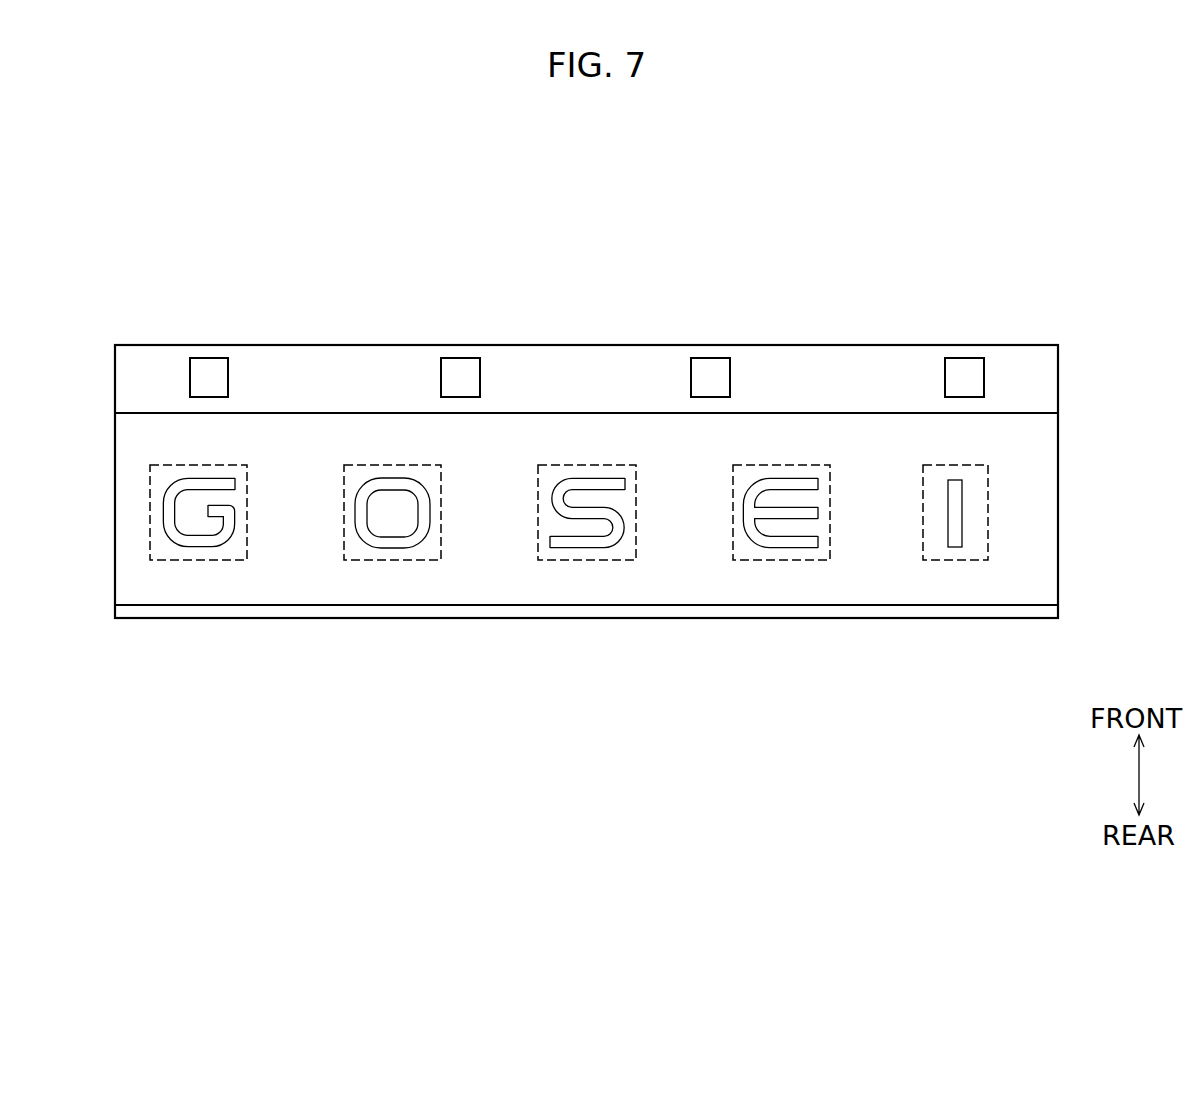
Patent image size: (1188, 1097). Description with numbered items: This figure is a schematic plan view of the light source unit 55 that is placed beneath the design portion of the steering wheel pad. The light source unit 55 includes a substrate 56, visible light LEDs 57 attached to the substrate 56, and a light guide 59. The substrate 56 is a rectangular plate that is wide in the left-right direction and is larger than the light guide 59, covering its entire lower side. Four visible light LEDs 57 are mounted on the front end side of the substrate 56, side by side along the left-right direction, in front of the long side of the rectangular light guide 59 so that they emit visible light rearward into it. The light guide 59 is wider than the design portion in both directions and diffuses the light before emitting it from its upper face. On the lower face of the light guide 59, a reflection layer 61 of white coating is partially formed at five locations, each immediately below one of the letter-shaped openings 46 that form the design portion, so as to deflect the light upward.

The light source unit 55 is at (1021, 268).
The substrate 56 is at (881, 365).
The visible light LED 57 is at (210, 366).
The light guide 59 is at (1043, 487).
The reflection layer 61 is at (238, 560).
The opening 46 is at (200, 547).